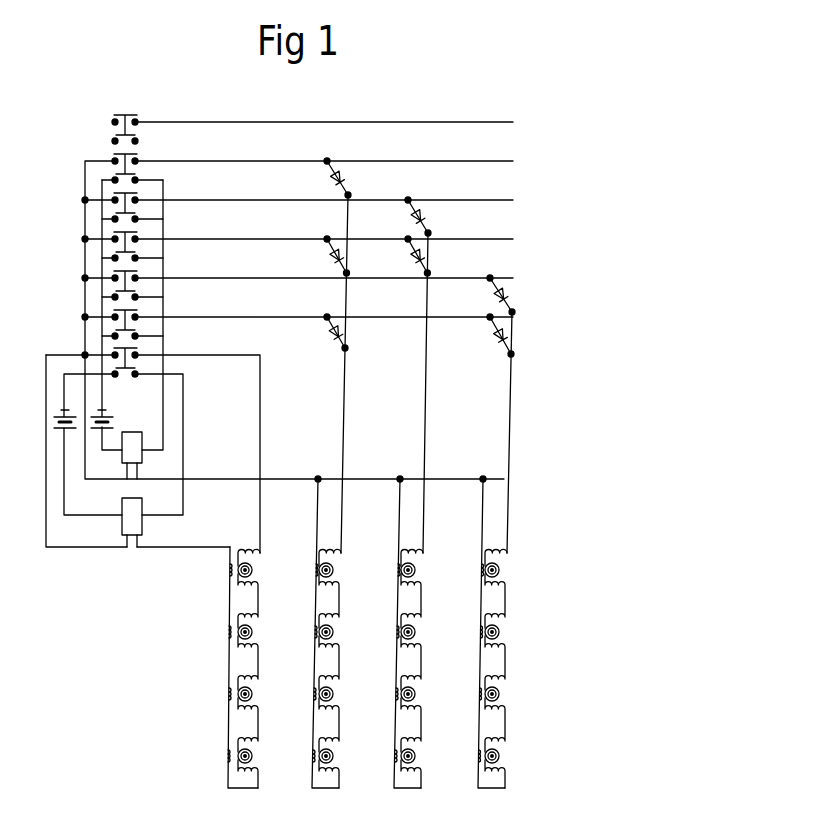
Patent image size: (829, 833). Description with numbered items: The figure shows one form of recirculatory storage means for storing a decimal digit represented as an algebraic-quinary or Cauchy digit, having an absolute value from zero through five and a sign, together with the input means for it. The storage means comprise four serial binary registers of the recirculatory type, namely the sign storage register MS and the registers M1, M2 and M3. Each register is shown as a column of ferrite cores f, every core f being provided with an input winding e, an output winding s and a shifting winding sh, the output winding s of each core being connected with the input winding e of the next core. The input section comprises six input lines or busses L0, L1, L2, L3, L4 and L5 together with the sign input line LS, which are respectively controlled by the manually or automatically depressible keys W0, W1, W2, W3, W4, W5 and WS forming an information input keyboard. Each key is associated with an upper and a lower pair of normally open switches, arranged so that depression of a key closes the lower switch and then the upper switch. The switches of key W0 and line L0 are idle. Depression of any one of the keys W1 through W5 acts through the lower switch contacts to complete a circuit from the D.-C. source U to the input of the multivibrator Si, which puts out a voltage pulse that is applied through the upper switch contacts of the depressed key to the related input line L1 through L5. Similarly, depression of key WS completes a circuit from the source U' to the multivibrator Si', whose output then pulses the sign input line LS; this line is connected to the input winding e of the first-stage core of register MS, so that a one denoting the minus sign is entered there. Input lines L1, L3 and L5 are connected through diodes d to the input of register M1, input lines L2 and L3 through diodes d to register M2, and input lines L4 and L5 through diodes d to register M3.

The key W0 is at (147, 113).
The key W1 is at (138, 153).
The key W2 is at (138, 192).
The key W3 is at (138, 231).
The key W4 is at (138, 270).
The key W5 is at (138, 309).
The key WS is at (138, 347).
The input line L0 is at (312, 122).
The input line L1 is at (312, 161).
The input line L2 is at (312, 200).
The input line L3 is at (312, 239).
The input line L4 is at (312, 278).
The input line L5 is at (312, 317).
The sign input line LS is at (249, 356).
The diode d is at (343, 176).
The D.-C. source U' is at (41, 407).
The D.-C. source U is at (110, 408).
The multivibrator Si is at (169, 445).
The multivibrator Si' is at (169, 522).
The input winding e is at (253, 552).
The ferrite core f is at (252, 571).
The shifting winding sh is at (230, 564).
The output winding s is at (242, 588).
The sign storage register MS is at (243, 681).
The serial binary register M1 is at (329, 505).
The serial binary register M2 is at (410, 524).
The serial binary register M3 is at (494, 563).